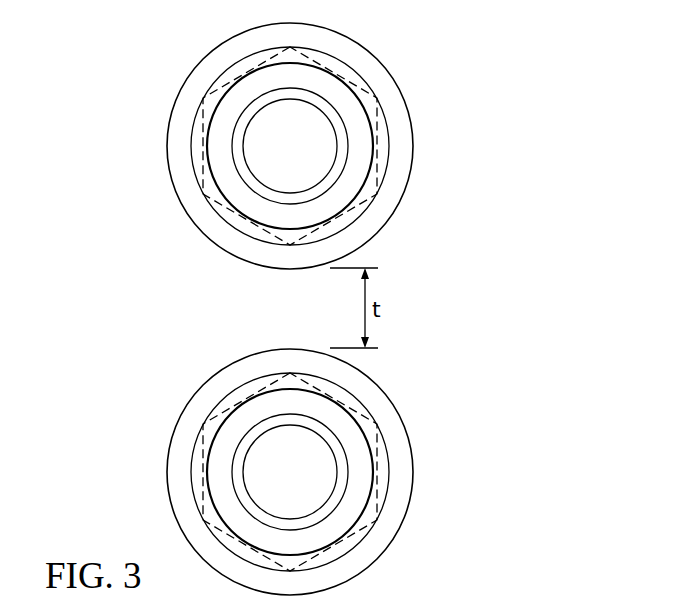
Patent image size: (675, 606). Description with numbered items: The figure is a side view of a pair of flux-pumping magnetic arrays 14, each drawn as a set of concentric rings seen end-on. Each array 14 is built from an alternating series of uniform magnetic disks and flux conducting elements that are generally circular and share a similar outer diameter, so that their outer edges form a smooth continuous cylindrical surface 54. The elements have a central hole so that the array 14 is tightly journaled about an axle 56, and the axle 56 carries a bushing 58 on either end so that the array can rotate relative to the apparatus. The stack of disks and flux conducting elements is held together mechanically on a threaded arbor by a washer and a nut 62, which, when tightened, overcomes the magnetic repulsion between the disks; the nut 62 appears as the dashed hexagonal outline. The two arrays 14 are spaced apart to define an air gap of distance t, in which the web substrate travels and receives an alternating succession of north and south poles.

The flux-pumping magnetic array 14 is at (406, 50).
The smooth continuous cylindrical surface 54 is at (419, 475).
The axle 56 is at (238, 150).
The bushing 58 is at (355, 117).
The nut 62 is at (222, 212).